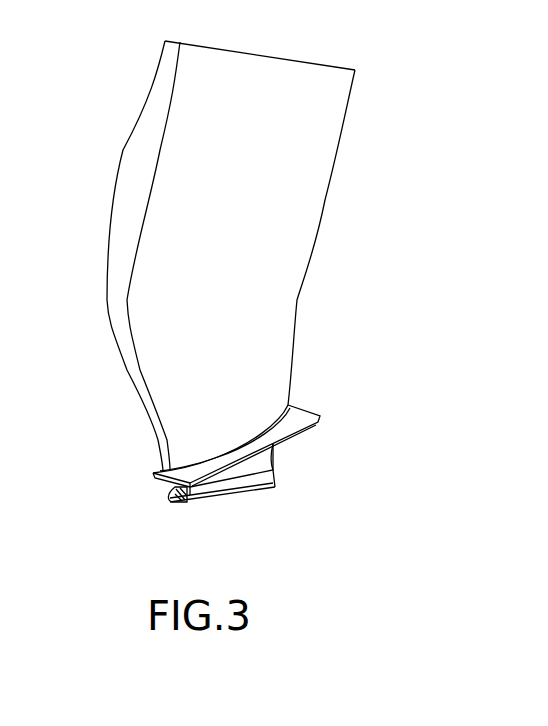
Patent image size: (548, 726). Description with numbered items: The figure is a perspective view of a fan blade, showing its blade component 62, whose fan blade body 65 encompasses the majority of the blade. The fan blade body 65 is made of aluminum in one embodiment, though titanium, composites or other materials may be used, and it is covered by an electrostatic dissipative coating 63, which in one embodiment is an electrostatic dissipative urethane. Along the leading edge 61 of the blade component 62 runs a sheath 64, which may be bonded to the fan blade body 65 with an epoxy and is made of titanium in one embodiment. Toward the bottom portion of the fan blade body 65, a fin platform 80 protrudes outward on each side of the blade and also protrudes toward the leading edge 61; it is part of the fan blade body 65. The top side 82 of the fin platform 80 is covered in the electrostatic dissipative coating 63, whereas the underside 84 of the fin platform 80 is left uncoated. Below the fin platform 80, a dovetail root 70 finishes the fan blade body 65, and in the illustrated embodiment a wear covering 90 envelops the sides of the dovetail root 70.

The leading edge 61 is at (102, 305).
The blade component 62 is at (361, 64).
The electrostatic dissipative coating 63 is at (302, 142).
The sheath 64 is at (143, 177).
The fan blade body 65 is at (405, 477).
The dovetail root 70 is at (237, 497).
The fin platform 80 is at (320, 420).
The top side 82 is at (297, 418).
The underside 84 is at (283, 447).
The wear covering 90 is at (178, 503).